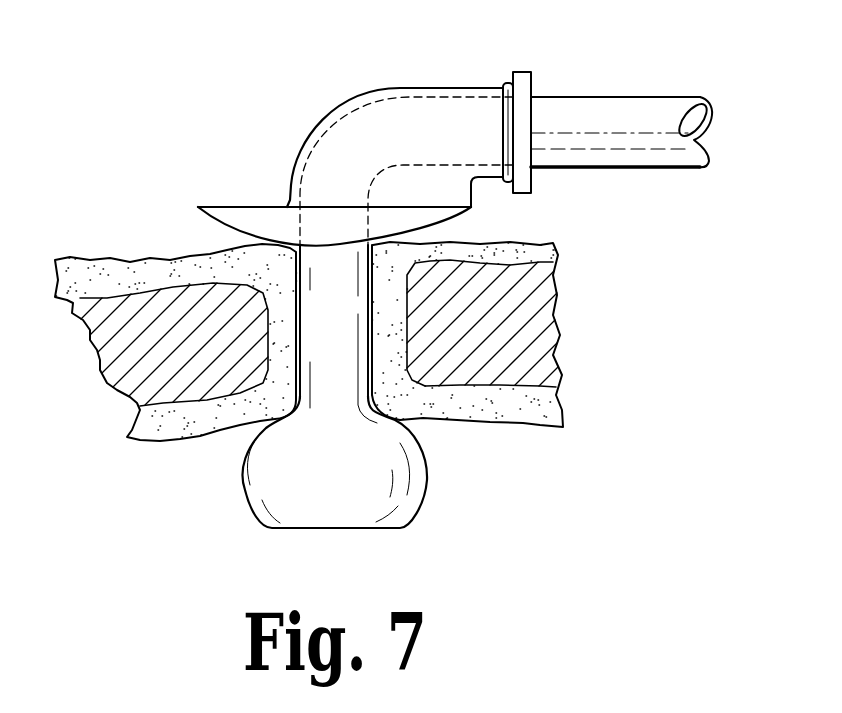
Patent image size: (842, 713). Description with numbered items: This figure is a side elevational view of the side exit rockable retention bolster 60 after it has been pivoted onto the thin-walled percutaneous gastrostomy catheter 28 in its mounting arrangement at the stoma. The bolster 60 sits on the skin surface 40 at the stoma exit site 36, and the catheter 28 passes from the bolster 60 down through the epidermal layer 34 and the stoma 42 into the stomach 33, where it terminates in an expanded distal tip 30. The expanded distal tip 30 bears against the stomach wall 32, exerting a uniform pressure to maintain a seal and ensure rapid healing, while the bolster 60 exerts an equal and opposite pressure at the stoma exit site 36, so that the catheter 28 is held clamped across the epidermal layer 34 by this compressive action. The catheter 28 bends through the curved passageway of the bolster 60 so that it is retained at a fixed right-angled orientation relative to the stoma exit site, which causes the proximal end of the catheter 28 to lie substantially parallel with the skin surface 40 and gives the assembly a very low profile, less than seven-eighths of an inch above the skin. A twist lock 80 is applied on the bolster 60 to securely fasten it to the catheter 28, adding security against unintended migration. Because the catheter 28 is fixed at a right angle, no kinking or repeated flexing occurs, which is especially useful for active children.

The percutaneous gastrostomy catheter 28 is at (648, 97).
The expanded distal tip 30 is at (427, 497).
The stomach wall 32 is at (497, 408).
The stomach 33 is at (211, 492).
The epidermal layer 34 is at (206, 350).
The stoma exit site 36 is at (198, 253).
The skin surface 40 is at (141, 258).
The stoma 42 is at (375, 325).
The side exit retention bolster 60 is at (301, 146).
The twist lock 80 is at (503, 83).